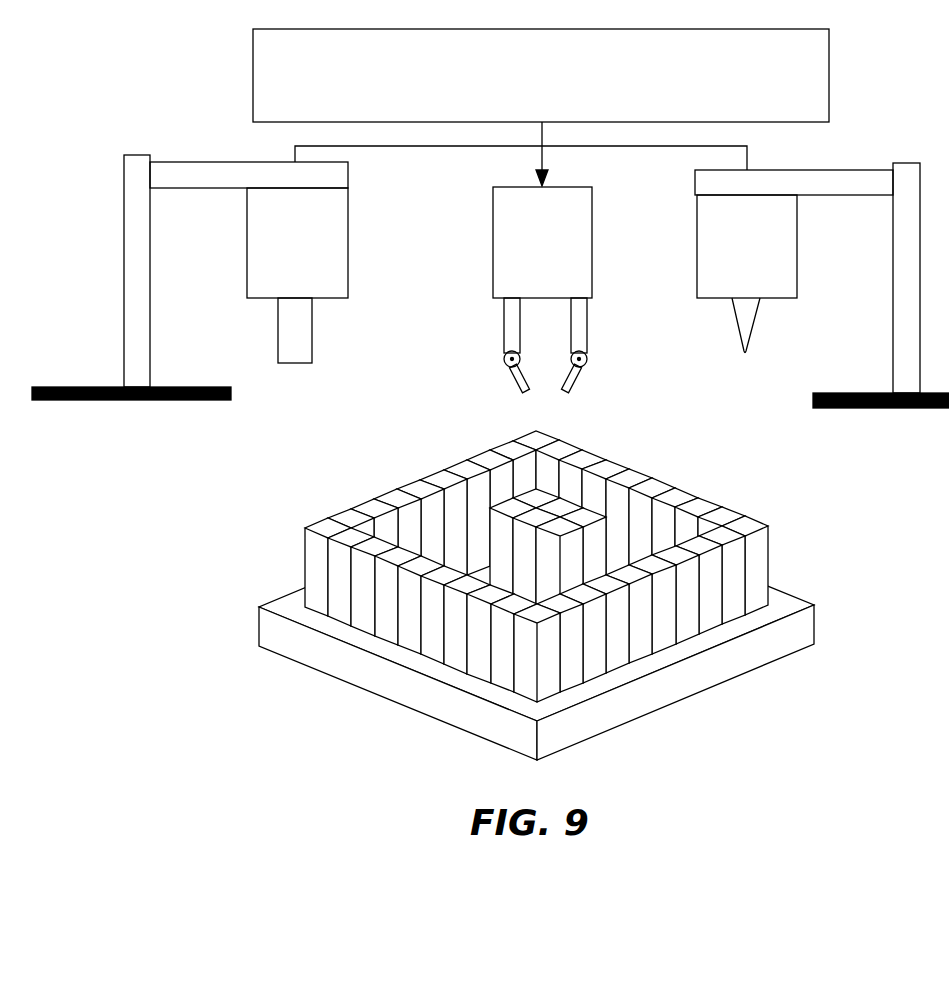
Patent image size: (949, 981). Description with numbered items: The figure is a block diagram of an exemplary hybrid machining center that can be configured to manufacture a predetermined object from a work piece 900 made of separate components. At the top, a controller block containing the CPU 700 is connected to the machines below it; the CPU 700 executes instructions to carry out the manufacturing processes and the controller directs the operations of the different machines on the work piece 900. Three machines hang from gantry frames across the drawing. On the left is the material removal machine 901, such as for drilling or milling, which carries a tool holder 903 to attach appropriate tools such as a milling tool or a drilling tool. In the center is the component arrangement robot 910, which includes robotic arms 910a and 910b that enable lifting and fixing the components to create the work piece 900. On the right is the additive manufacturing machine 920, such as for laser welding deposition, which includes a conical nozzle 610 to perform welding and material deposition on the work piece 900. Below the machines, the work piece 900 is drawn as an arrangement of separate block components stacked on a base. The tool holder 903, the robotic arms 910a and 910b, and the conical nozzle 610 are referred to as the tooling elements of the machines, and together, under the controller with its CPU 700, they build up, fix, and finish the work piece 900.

The CPU 700 is at (541, 75).
The material removal machine 901 is at (247, 242).
The tool holder 903 is at (278, 350).
The component arrangement robot 910 is at (541, 290).
The robotic arm 910a is at (504, 332).
The robotic arm 910b is at (585, 332).
The additive manufacturing machine 920 is at (797, 238).
The conical nozzle 610 is at (753, 323).
The work piece 900 is at (793, 562).